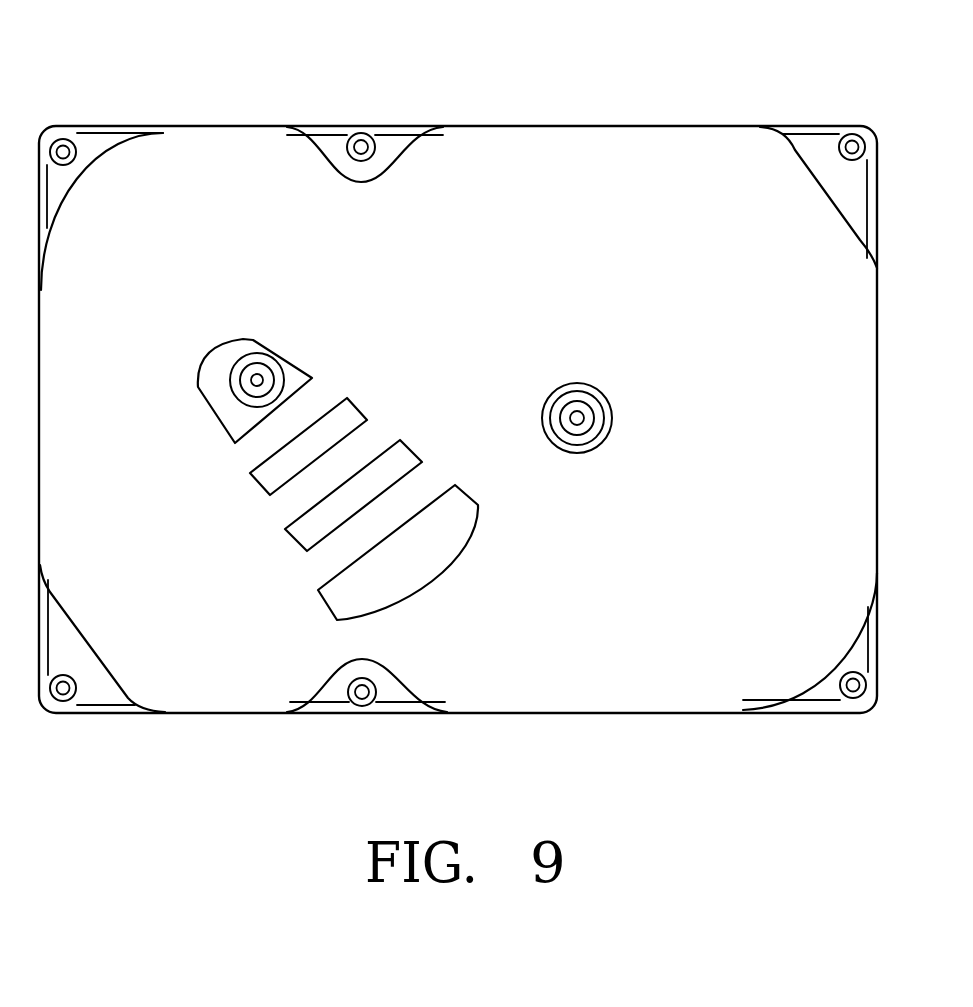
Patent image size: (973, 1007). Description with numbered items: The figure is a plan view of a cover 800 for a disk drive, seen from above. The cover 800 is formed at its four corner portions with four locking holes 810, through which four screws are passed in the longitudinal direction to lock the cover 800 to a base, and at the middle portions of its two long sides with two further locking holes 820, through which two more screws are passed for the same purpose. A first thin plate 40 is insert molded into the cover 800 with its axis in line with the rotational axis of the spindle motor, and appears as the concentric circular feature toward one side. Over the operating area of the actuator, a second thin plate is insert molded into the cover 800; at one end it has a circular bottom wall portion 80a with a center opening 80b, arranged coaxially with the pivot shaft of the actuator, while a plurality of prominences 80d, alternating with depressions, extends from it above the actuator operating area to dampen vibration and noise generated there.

The cover 800 is at (634, 104).
The locking holes 810 is at (64, 150).
The locking holes 820 is at (362, 147).
The circular bottom wall portion 80a is at (268, 376).
The center opening 80b is at (258, 378).
The prominences 80d is at (460, 510).
The first thin plate 40 is at (586, 407).